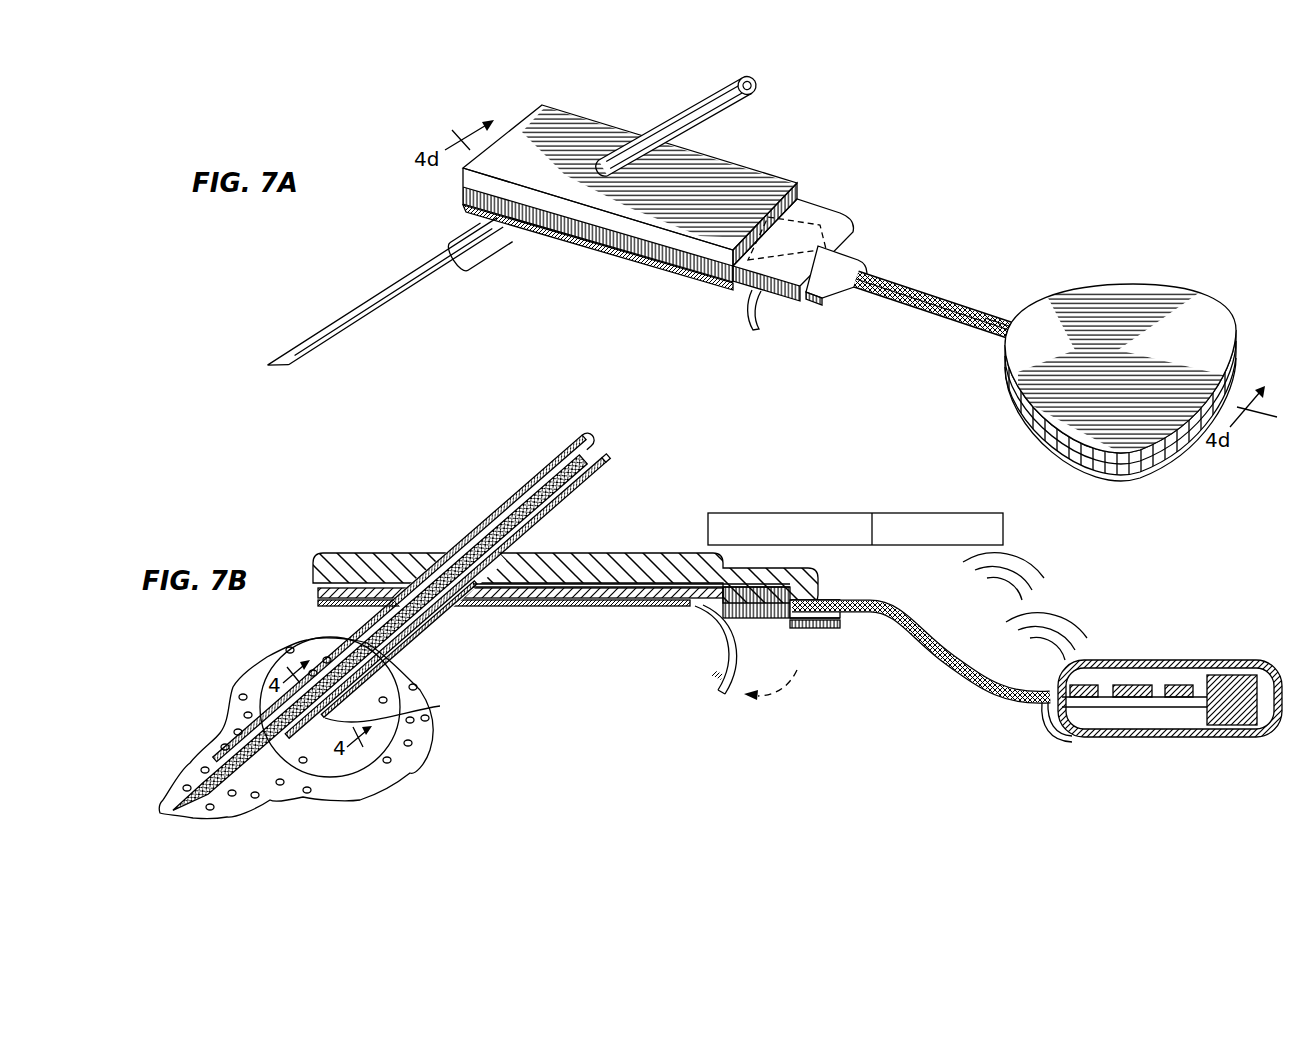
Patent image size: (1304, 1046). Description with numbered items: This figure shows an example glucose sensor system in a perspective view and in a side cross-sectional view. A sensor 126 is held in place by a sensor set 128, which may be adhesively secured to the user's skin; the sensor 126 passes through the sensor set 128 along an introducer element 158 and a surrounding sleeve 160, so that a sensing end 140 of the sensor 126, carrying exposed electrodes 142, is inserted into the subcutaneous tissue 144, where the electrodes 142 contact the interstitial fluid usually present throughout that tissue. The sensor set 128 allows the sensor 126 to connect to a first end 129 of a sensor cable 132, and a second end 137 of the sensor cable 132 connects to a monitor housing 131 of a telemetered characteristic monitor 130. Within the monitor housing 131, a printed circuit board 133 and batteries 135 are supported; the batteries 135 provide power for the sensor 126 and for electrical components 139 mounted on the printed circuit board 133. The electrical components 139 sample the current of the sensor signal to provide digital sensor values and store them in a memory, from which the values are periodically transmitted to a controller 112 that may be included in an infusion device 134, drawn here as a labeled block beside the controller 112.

In FIG. 7B, the controller 112 is at (933, 512).
In FIG. 7A, the sensor 126 is at (379, 318).
In FIG. 7B, the sensor 126 is at (590, 582).
In FIG. 7A, the sensor set 128 is at (620, 108).
In FIG. 7B, the sensor set 128 is at (500, 458).
In FIG. 7A, the first end of sensor cable 129 is at (862, 266).
In FIG. 7B, the first end of sensor cable 129 is at (852, 600).
In FIG. 7A, the telemetered characteristic monitor 130 is at (1120, 324).
In FIG. 7B, the telemetered characteristic monitor 130 is at (1133, 677).
In FIG. 7A, the monitor housing 131 is at (1160, 298).
In FIG. 7B, the monitor housing 131 is at (1123, 660).
In FIG. 7A, the sensor cable 132 is at (940, 300).
In FIG. 7B, the sensor cable 132 is at (930, 665).
In FIG. 7B, the printed circuit board 133 is at (1085, 720).
In FIG. 7B, the infusion device 134 is at (788, 512).
In FIG. 7B, the batteries 135 is at (1250, 667).
In FIG. 7A, the second end of sensor cable 137 is at (985, 312).
In FIG. 7B, the second end of sensor cable 137 is at (1030, 708).
In FIG. 7B, the electrical components 139 is at (1180, 703).
In FIG. 7B, the sensing end 140 is at (290, 767).
In FIG. 7B, the electrodes 142 is at (440, 706).
In FIG. 7B, the subcutaneous tissue 144 is at (185, 770).
In FIG. 7A, the introducer needle 158 is at (748, 103).
In FIG. 7B, the introducer needle 158 is at (573, 448).
In FIG. 7A, the sleeve 160 is at (505, 250).
In FIG. 7B, the sleeve 160 is at (337, 740).